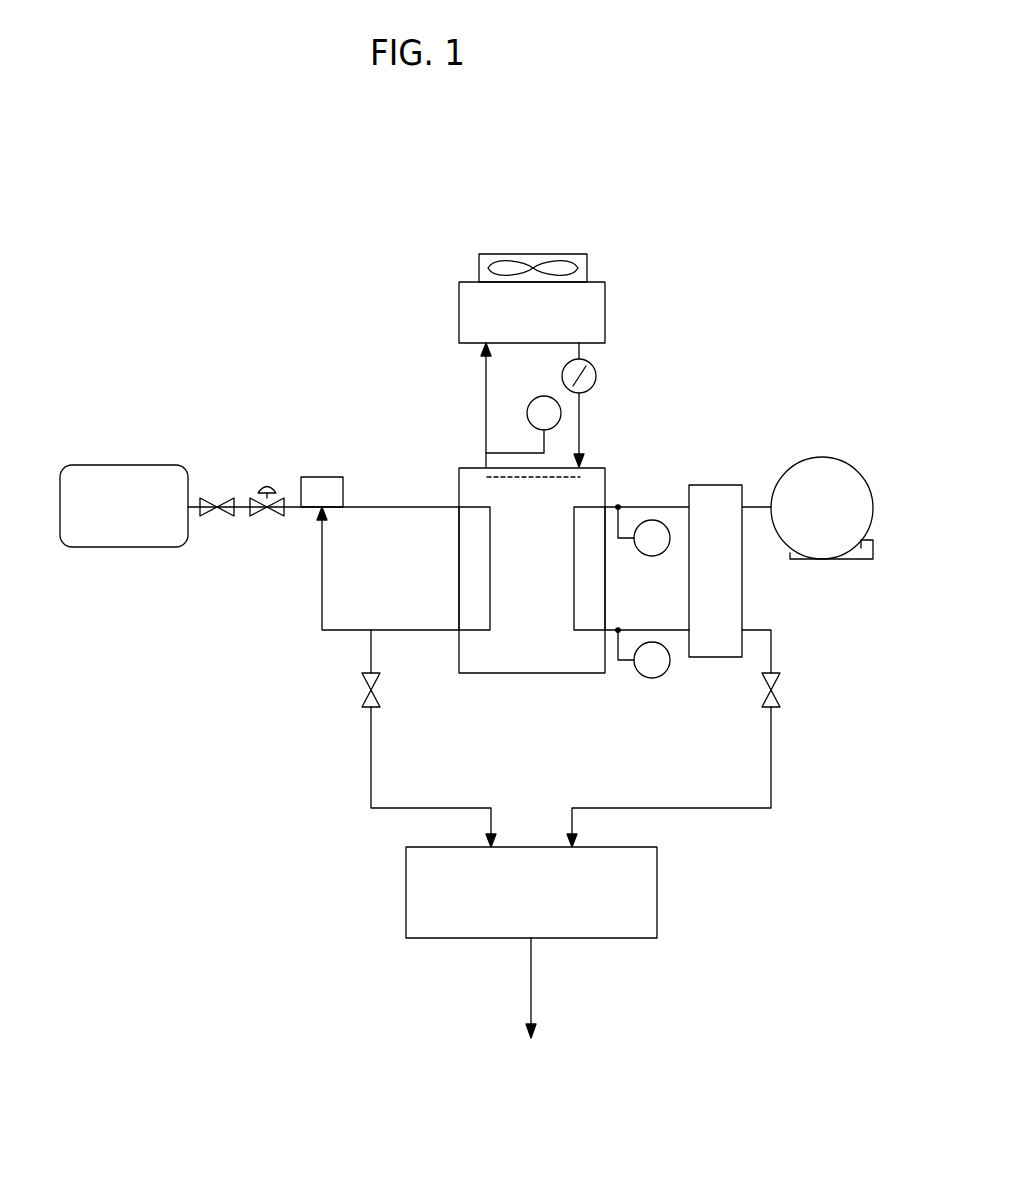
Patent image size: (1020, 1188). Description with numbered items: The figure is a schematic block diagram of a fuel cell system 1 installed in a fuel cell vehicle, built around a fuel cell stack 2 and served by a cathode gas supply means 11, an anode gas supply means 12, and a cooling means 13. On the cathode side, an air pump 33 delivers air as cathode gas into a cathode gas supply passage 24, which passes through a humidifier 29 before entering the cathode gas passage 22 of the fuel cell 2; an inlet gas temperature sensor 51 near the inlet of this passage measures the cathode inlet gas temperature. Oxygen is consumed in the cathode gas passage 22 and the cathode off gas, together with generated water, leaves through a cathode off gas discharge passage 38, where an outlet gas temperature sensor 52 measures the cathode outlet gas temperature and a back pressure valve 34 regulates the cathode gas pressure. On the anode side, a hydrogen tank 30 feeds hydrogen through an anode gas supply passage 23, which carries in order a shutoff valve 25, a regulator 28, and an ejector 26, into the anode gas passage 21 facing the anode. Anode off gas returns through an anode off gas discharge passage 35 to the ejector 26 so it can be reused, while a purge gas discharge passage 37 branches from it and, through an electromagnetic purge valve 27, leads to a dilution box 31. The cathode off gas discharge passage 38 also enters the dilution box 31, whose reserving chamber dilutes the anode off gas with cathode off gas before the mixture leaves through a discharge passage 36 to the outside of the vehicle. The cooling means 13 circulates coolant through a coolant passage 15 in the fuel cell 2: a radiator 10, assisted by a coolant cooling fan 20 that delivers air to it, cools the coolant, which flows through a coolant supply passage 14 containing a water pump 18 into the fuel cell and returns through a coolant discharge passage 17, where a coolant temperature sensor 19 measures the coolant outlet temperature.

The fuel cell system 1 is at (640, 266).
The fuel cell stack 2 is at (470, 468).
The radiator 10 is at (459, 303).
The cathode gas supply means 11 is at (788, 586).
The anode gas supply means 12 is at (184, 594).
The cooling means 13 is at (469, 272).
The coolant supply passage 14 is at (579, 426).
The coolant passage 15 is at (532, 478).
The coolant discharge passage 17 is at (486, 378).
The water pump 18 is at (596, 376).
The coolant temperature sensor 19 is at (538, 401).
The coolant cooling fan 20 is at (540, 254).
The anode gas passage 21 is at (490, 566).
The cathode gas passage 22 is at (574, 566).
The anode gas supply passage 23 is at (366, 507).
The cathode gas supply passage 24 is at (634, 507).
The shutoff valve 25 is at (214, 497).
The ejector 26 is at (343, 489).
The purge valve 27 is at (364, 691).
The regulator 28 is at (268, 484).
The humidifier 29 is at (718, 485).
The hydrogen tank 30 is at (135, 466).
The dilution box 31 is at (658, 889).
The air pump 33 is at (820, 458).
The back pressure valve 34 is at (780, 691).
The anode off gas discharge passage 35 is at (340, 631).
The discharge passage 36 is at (531, 978).
The purge gas discharge passage 37 is at (366, 656).
The cathode off gas discharge passage 38 is at (772, 657).
The inlet gas temperature sensor 51 is at (652, 556).
The outlet gas temperature sensor 52 is at (652, 678).